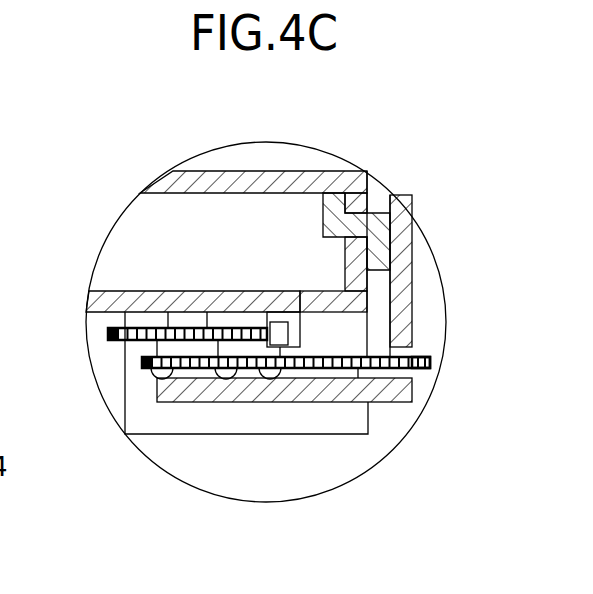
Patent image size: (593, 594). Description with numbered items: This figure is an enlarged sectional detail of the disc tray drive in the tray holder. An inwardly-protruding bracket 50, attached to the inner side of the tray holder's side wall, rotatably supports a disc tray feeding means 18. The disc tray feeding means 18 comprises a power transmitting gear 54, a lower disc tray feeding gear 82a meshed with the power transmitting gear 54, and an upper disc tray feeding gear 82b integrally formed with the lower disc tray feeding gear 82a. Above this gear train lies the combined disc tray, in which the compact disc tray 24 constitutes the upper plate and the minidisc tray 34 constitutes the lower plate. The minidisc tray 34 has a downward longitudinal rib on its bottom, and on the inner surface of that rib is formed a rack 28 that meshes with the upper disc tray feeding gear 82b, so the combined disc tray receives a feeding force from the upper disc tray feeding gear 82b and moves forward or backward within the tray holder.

The compact disc tray 24 is at (196, 174).
The minidisc tray 34 is at (97, 293).
The rack 28 is at (290, 335).
The disc tray feeding means 18 is at (423, 381).
The bracket 50 is at (277, 393).
The upper disc tray feeding gear 82b is at (108, 333).
The lower disc tray feeding gear 82a is at (142, 359).
The power transmitting gear 54 is at (432, 360).